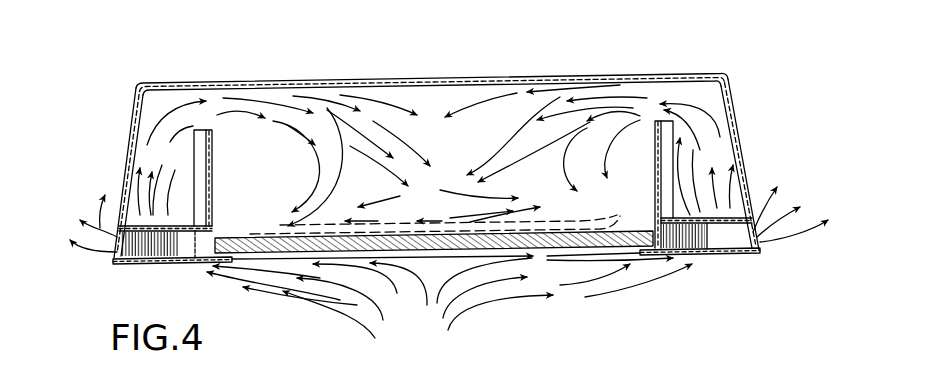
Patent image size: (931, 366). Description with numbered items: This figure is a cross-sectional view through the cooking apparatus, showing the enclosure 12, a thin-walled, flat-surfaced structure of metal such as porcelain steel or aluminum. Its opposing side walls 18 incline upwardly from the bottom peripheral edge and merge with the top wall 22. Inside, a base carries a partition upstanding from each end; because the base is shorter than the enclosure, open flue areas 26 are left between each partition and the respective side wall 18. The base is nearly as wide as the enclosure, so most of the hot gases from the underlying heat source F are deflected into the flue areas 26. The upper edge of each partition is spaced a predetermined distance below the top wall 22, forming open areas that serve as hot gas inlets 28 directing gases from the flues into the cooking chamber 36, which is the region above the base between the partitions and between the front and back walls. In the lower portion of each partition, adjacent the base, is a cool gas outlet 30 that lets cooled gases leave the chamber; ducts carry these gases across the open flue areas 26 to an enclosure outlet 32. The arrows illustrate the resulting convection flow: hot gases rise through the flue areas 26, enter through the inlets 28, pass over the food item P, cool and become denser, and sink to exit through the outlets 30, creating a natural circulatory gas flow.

The enclosure 12 is at (433, 142).
The side walls 18 is at (134, 110).
The top wall 22 is at (347, 80).
The open flue areas 26 is at (163, 152).
The hot gas inlets 28 is at (216, 106).
The cool gas outlet 30 is at (220, 234).
The enclosure outlet 32 is at (117, 232).
The cooking chamber 36 is at (453, 110).
The food item P is at (404, 224).
The heat source F is at (402, 333).